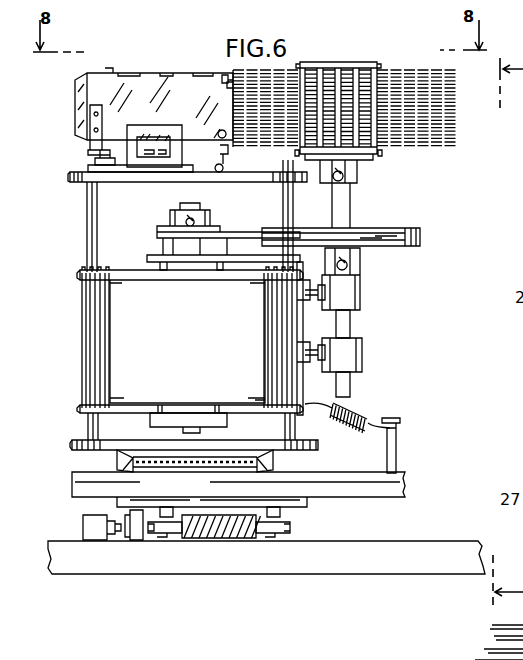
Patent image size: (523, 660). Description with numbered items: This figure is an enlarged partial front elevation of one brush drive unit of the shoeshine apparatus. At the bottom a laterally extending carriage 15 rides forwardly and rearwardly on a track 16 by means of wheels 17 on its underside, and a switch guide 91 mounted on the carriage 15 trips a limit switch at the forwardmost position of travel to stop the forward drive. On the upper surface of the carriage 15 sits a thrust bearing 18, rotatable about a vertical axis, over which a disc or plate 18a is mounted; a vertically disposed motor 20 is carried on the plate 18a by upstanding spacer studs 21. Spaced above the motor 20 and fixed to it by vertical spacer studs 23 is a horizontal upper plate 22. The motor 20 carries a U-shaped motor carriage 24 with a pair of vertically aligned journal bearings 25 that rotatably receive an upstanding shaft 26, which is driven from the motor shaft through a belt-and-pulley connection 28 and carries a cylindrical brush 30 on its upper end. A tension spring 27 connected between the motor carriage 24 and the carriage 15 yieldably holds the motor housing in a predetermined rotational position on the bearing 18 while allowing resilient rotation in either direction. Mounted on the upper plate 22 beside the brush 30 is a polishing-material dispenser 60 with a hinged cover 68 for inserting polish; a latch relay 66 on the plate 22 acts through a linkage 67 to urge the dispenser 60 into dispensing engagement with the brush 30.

The polishing-material dispenser 60 is at (142, 76).
The hinged cover 68 is at (186, 75).
The linkage 67 is at (100, 160).
The latch relay 66 is at (180, 150).
The brush 30 is at (458, 118).
The plate 22 is at (70, 178).
The spacer studs 23 is at (86, 242).
The belt-and-pulley connection 28 is at (386, 232).
The journal bearings 25 is at (360, 292).
The upstanding shaft 26 is at (350, 318).
The motor carriage 24 is at (312, 326).
The motor 20 is at (151, 340).
The spacer studs 21 is at (100, 425).
The plate 18a is at (80, 440).
The thrust bearing 18 is at (117, 458).
The carriage 15 is at (395, 482).
The tension spring 27 is at (370, 411).
The track 16 is at (240, 540).
The wheels 17 is at (144, 545).
The switch guide 91 is at (140, 540).